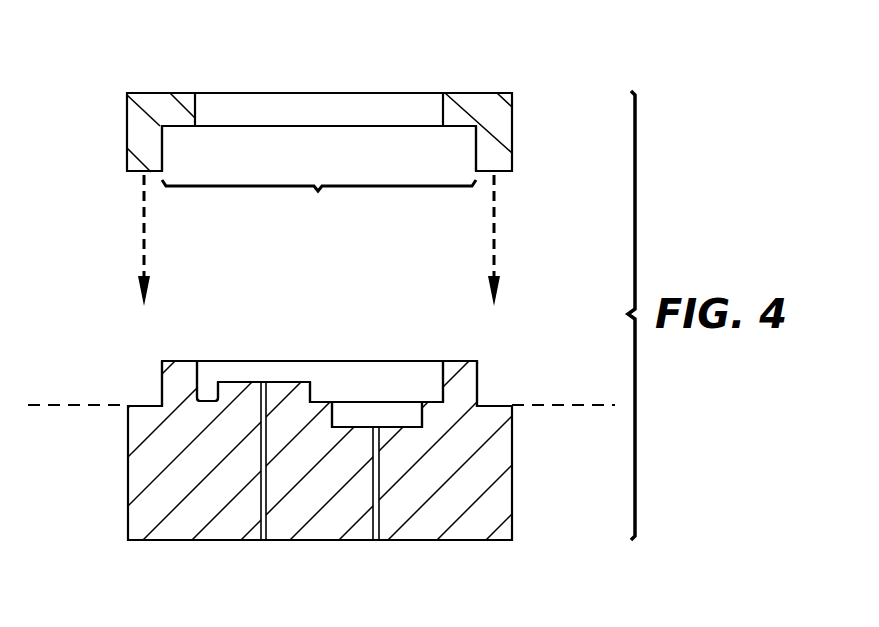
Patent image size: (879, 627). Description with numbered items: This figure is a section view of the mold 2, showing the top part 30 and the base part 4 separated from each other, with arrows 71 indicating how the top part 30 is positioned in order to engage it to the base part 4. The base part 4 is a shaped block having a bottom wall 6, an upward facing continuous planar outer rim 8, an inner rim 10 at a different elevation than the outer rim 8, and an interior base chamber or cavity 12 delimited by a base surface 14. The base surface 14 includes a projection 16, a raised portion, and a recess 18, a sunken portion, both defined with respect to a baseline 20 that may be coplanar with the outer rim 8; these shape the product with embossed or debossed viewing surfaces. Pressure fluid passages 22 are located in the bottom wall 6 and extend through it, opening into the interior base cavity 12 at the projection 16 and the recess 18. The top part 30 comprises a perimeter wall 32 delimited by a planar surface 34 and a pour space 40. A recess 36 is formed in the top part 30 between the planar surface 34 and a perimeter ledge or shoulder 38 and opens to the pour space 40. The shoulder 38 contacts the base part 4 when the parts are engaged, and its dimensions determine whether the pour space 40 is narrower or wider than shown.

The mold 2 is at (536, 100).
The base part 4 is at (110, 474).
The bottom wall 6 is at (160, 542).
The outer rim 8 is at (136, 405).
The inner rim 10 is at (477, 361).
The interior base chamber or cavity 12 is at (334, 370).
The base surface 14 is at (320, 402).
The projection 16 is at (234, 370).
The recess 18 is at (395, 404).
The baseline 20 is at (72, 405).
The pressure fluid passage 22 is at (263, 542).
The top part 30 is at (112, 129).
The perimeter wall 32 is at (127, 158).
The planar surface 34 is at (197, 108).
The recess 36 is at (319, 203).
The perimeter ledge or shoulder 38 is at (177, 130).
The pour space 40 is at (328, 140).
The arrows 71 is at (143, 237).